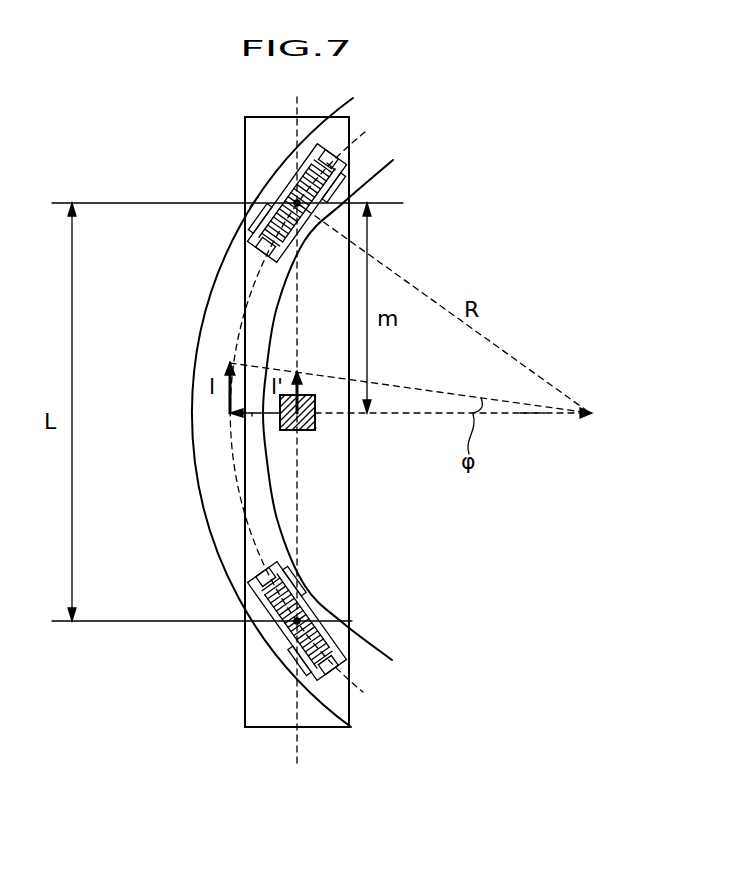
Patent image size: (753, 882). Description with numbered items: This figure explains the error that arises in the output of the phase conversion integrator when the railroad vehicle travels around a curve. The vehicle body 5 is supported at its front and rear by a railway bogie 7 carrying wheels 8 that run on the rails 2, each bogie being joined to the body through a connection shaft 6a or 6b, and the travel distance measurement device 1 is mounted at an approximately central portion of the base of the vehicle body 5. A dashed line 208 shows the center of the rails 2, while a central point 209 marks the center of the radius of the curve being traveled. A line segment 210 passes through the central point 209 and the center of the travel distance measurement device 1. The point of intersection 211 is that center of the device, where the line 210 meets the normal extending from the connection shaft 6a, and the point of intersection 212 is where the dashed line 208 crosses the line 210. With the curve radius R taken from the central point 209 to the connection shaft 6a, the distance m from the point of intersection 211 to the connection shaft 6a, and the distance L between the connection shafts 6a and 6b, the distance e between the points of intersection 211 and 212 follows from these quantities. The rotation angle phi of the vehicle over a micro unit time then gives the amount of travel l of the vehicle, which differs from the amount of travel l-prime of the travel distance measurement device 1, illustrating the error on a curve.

The travel distance measurement device 1 is at (316, 403).
The rails 2 is at (277, 313).
The vehicle body 5 is at (245, 143).
The railway bogie 7 is at (330, 176).
The wheels 8 is at (258, 197).
The connection shaft 6a is at (282, 236).
The connection shaft 6b is at (352, 621).
The dashed line 208 is at (230, 467).
The central point 209 is at (590, 415).
The line segment 210 is at (532, 414).
The point of intersection 211 is at (316, 427).
The point of intersection 212 is at (230, 413).
The distance e is at (253, 413).